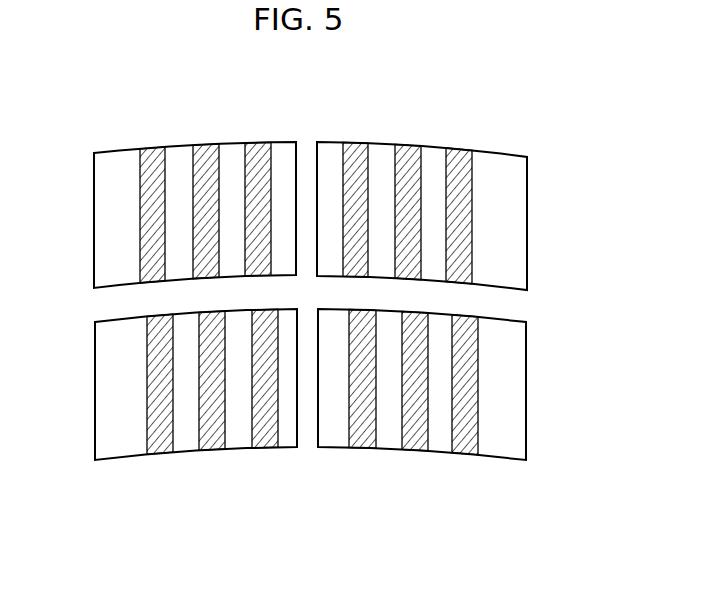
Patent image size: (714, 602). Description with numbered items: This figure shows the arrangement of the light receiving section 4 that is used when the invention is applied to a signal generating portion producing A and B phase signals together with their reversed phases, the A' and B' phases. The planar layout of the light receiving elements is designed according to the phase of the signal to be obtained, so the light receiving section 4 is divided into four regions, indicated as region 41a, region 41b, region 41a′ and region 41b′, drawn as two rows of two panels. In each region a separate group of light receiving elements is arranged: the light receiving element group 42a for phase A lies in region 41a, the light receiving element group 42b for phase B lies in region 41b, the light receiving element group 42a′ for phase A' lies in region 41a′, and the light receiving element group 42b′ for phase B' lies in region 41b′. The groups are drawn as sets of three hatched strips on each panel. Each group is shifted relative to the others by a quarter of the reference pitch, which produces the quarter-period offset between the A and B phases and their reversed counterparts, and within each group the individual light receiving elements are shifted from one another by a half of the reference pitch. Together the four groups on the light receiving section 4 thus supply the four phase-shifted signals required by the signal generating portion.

The light receiving section 4 is at (540, 172).
The region for phase A 41a is at (113, 173).
The region for phase B 41b is at (497, 173).
The region for phase A' 41a′ is at (113, 428).
The region for phase B' 41b′ is at (500, 430).
The light receiving element group for phase A 42a is at (257, 165).
The light receiving element group for phase B 42b is at (450, 170).
The light receiving element group for phase A' 42a′ is at (265, 423).
The light receiving element group for phase B' 42b′ is at (362, 418).